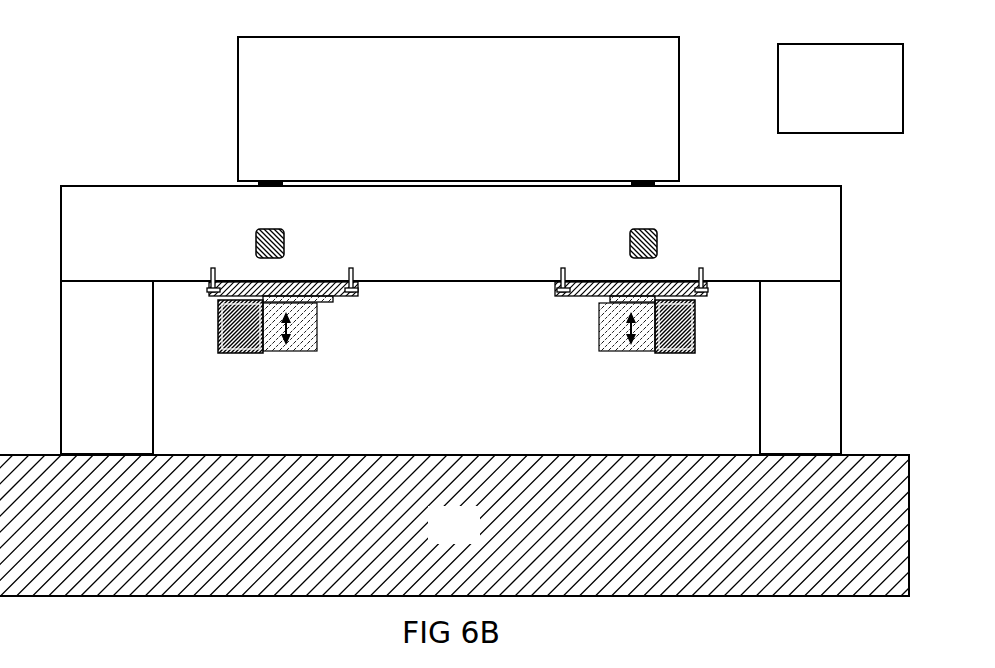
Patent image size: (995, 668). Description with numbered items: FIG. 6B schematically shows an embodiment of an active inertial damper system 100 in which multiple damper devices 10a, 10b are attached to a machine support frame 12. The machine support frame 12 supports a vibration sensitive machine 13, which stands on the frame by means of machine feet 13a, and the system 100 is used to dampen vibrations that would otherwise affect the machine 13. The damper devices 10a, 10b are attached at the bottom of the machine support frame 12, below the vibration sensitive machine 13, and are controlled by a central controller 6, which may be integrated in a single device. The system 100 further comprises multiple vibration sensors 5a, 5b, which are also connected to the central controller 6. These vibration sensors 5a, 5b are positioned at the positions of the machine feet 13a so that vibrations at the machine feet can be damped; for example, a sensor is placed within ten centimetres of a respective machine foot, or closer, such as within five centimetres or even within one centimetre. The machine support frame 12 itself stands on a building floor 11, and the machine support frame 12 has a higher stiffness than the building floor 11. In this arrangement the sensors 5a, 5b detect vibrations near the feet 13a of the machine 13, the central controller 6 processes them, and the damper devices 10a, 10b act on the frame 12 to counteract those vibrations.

The system 100 is at (88, 100).
The vibration sensitive machine 13 is at (473, 122).
The machine foot 13a is at (259, 178).
The central controller 6 is at (848, 102).
The machine support frame 12 is at (464, 249).
The building floor 11 is at (469, 537).
The vibration sensor 5a is at (250, 244).
The vibration sensor 5b is at (668, 245).
The damper device 10a is at (211, 348).
The damper device 10b is at (710, 348).